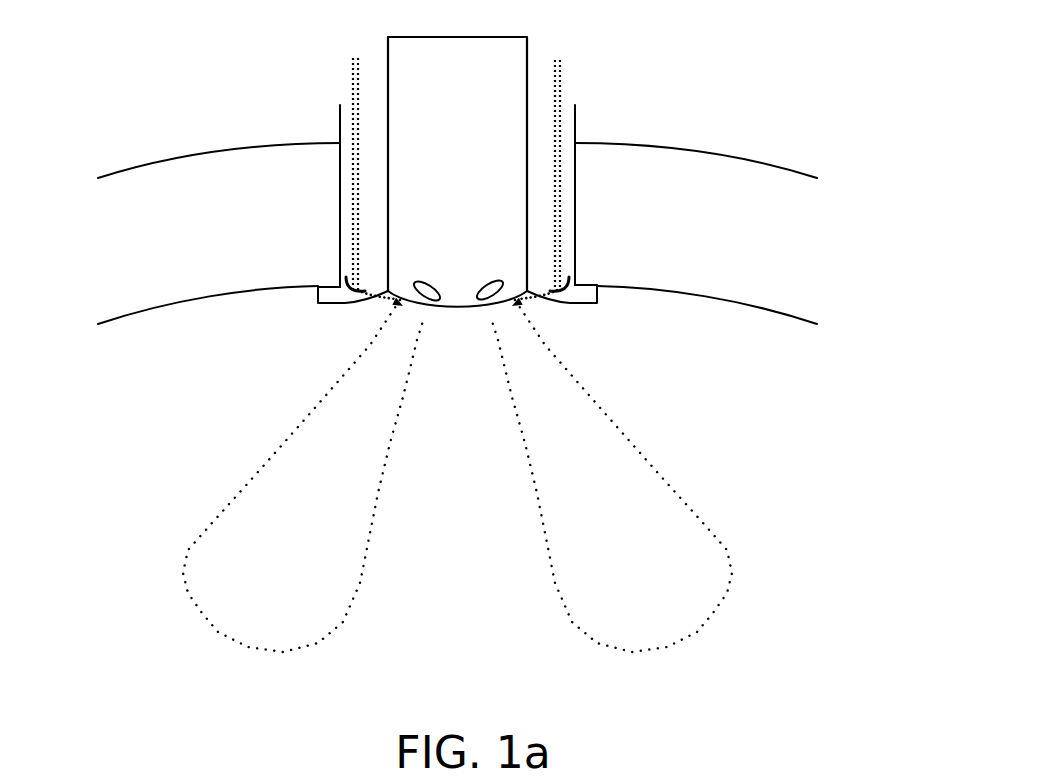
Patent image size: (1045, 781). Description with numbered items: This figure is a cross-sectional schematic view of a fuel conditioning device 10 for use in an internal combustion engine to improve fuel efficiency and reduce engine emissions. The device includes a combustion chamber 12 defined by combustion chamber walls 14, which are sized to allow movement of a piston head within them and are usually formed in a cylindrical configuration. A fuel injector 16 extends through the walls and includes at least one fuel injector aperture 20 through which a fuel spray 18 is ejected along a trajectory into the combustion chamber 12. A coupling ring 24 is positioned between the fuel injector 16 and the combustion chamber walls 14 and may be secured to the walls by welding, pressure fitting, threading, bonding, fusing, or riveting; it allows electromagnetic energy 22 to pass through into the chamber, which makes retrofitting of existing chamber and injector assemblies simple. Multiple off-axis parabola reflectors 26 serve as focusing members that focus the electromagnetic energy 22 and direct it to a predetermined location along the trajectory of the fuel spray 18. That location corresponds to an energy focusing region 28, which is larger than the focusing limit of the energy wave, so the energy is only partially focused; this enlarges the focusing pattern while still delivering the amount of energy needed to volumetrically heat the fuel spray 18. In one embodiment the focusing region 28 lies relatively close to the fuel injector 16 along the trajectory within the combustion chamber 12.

The fuel conditioning device 10 is at (709, 82).
The combustion chamber 12 is at (173, 381).
The combustion chamber walls 14 is at (247, 192).
The fuel injector 16 is at (485, 70).
The fuel spray 18 is at (378, 543).
The fuel injector aperture 20 is at (480, 281).
The electromagnetic energy 22 is at (558, 90).
The coupling ring 24 is at (592, 300).
The off-axis parabola reflector 26 is at (357, 302).
The energy focusing region 28 is at (480, 317).